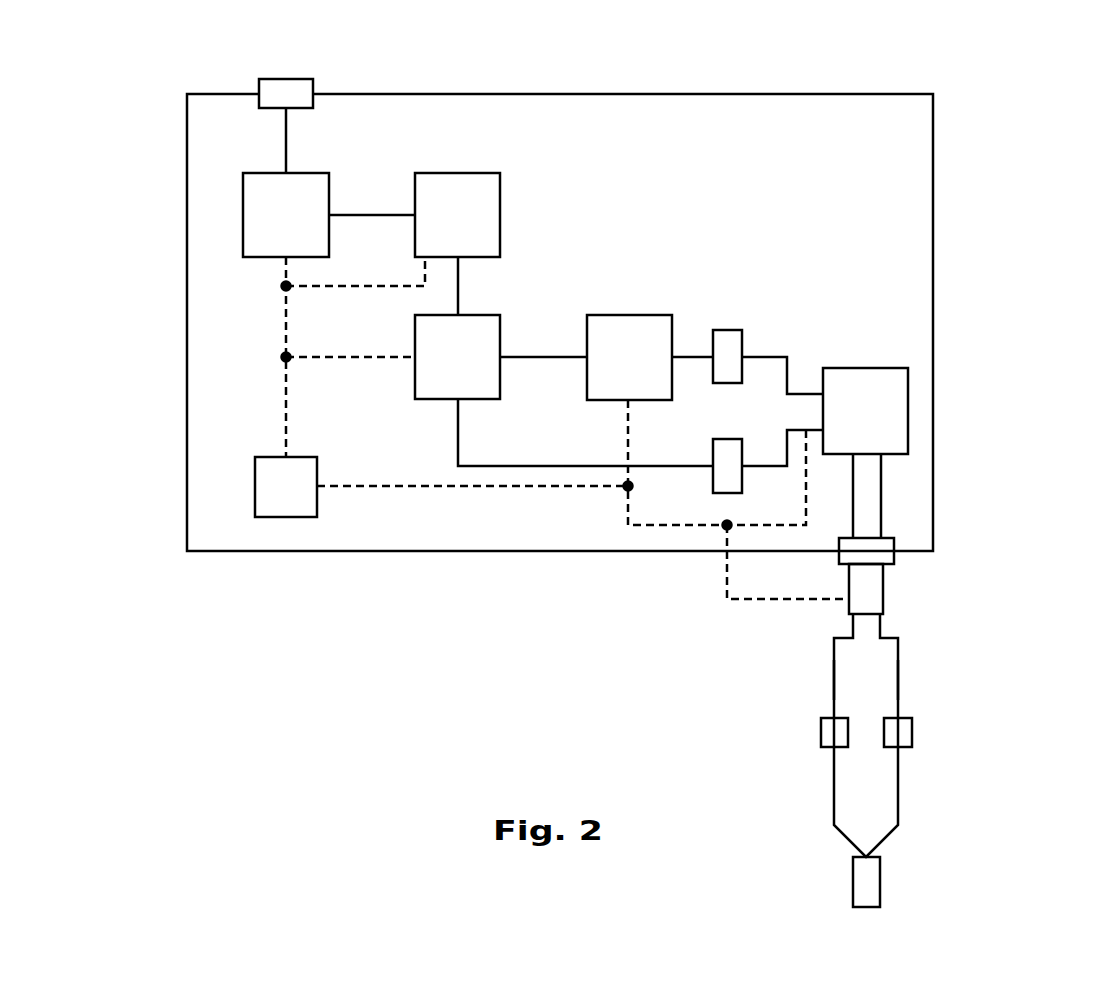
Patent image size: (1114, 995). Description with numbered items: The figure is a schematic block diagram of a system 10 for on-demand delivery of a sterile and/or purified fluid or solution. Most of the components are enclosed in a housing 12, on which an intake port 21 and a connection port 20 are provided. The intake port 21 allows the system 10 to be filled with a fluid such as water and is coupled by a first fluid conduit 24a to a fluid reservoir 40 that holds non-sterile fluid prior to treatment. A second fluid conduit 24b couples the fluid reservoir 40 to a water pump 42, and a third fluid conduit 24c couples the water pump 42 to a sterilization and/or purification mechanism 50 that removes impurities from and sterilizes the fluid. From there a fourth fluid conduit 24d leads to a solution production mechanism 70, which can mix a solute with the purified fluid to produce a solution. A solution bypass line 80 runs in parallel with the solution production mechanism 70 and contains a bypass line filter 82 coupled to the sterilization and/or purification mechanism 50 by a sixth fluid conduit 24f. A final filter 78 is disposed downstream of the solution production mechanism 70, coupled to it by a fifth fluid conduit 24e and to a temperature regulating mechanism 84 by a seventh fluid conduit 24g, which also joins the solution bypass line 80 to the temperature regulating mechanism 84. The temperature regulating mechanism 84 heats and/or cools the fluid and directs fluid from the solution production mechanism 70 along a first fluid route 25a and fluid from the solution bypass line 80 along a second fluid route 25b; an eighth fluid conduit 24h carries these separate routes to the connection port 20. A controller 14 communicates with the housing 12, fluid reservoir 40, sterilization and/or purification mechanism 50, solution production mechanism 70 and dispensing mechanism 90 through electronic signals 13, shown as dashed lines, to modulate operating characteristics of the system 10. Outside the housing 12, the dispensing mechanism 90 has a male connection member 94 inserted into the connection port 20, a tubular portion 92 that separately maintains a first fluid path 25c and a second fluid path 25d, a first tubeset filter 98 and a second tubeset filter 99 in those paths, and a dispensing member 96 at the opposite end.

The system 10 is at (1022, 255).
The housing 12 is at (933, 330).
The electronic signals 13 is at (538, 496).
The controller 14 is at (290, 497).
The connection port 20 is at (885, 554).
The intake port 21 is at (288, 90).
The first fluid conduit 24a is at (298, 150).
The second fluid conduit 24b is at (374, 206).
The third fluid conduit 24c is at (469, 295).
The fourth fluid conduit 24d is at (552, 364).
The fifth fluid conduit 24e is at (688, 347).
The sixth fluid conduit 24f is at (479, 482).
The seventh fluid conduit 24g is at (802, 356).
The eighth fluid conduit 24h is at (920, 505).
The first fluid route 25a is at (890, 481).
The second fluid route 25b is at (838, 520).
The first fluid path 25c is at (900, 675).
The second fluid path 25d is at (835, 688).
The fluid reservoir 40 is at (260, 220).
The water pump 42 is at (458, 197).
The sterilization and/or purification mechanism 50 is at (488, 337).
The solution production mechanism 70 is at (630, 330).
The final filter 78 is at (728, 343).
The solution bypass line 80 is at (445, 433).
The bypass line filter 82 is at (723, 475).
The temperature regulating mechanism 84 is at (893, 407).
The dispensing mechanism 90 is at (908, 760).
The tubular portion 92 is at (909, 792).
The male connection member 94 is at (877, 590).
The dispensing member 96 is at (872, 882).
The first tubeset filter 98 is at (913, 732).
The second tubeset filter 99 is at (822, 732).